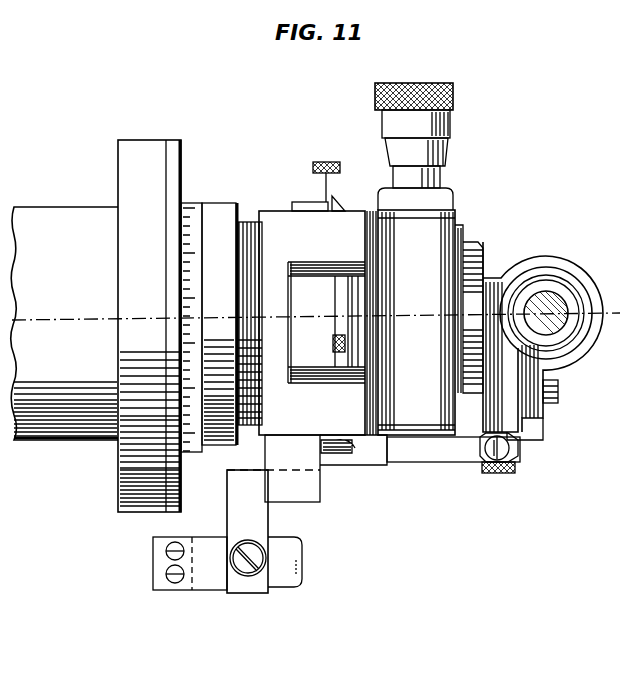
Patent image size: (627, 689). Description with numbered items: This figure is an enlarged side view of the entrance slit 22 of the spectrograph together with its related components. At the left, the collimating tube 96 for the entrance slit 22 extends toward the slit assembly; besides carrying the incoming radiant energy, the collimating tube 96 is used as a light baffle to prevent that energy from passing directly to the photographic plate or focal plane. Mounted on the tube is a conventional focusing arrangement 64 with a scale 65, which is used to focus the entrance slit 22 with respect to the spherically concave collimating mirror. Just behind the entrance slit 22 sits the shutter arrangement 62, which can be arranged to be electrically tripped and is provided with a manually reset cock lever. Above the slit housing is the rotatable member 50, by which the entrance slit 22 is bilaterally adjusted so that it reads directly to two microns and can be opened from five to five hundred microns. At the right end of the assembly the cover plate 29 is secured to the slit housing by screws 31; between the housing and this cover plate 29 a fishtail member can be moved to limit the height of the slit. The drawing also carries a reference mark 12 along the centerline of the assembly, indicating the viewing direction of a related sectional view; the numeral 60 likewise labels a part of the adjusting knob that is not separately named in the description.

The optical axis 12 is at (33, 346).
The entrance slit 22 is at (530, 262).
The cover plate 29 is at (479, 246).
The screws 31 is at (549, 403).
The rotatable member 50 is at (457, 93).
The adjustment knob body 60 is at (454, 159).
The shutter arrangement 62 is at (322, 299).
The focusing arrangement 64 is at (221, 232).
The scale 65 is at (197, 443).
The collimating tube 96 is at (70, 416).